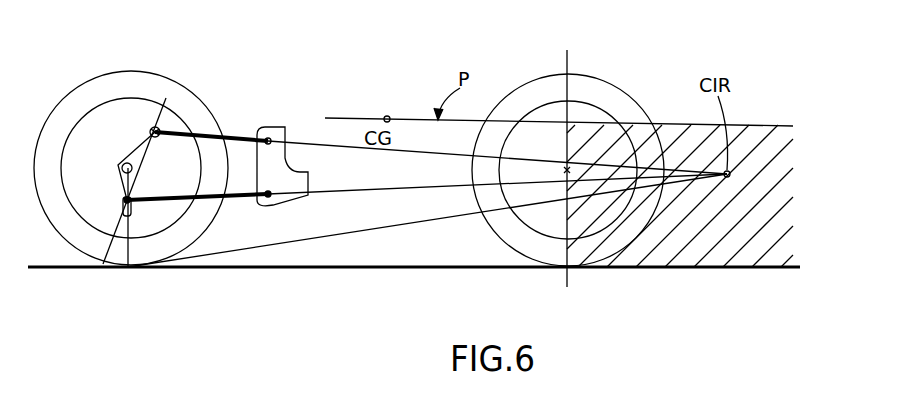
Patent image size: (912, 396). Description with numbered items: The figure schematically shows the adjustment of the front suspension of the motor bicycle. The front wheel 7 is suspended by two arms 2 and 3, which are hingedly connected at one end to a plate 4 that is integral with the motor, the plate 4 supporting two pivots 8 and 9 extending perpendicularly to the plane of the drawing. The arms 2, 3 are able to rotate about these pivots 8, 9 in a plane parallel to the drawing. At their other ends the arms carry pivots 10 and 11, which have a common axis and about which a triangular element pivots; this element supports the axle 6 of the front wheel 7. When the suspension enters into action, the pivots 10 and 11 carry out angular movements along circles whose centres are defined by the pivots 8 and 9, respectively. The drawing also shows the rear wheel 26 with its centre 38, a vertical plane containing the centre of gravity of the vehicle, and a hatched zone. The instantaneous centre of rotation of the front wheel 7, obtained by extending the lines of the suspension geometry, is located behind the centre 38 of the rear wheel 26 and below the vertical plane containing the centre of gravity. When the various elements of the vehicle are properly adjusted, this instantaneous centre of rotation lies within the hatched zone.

The arm 2 is at (233, 130).
The arm 3 is at (226, 200).
The plate 4 is at (277, 172).
The axle of the front wheel 6 is at (118, 163).
The front wheel 7 is at (123, 85).
The pivot 8 is at (268, 137).
The pivot 9 is at (273, 198).
The pivot 10 is at (150, 128).
The pivot 11 is at (130, 204).
The rear wheel 26 is at (617, 98).
The centre of the rear wheel 38 is at (565, 166).